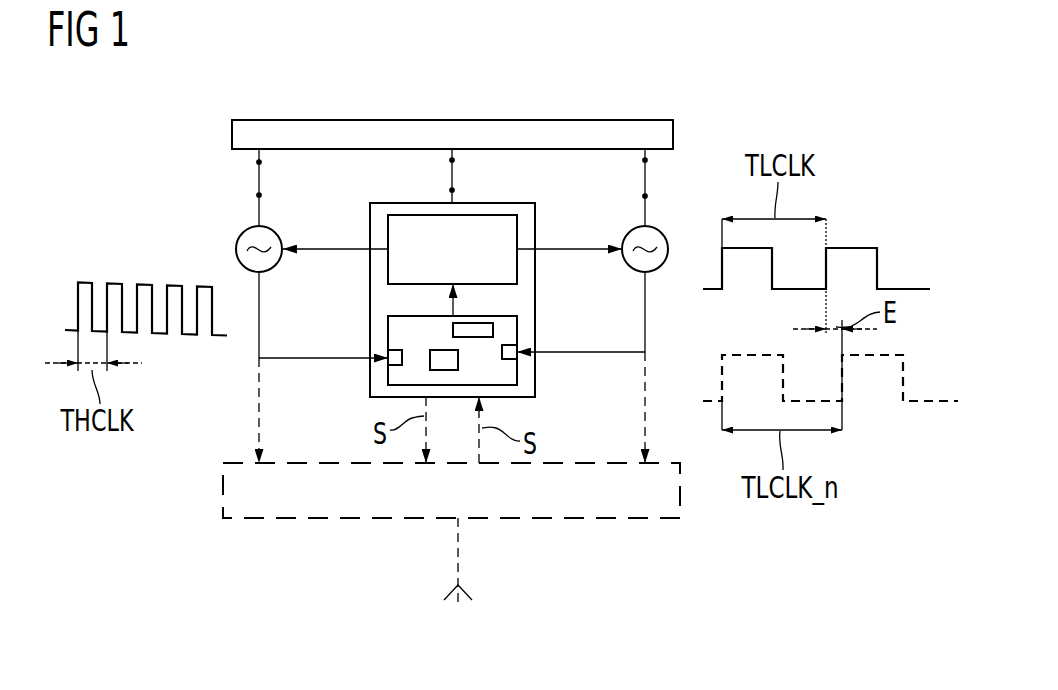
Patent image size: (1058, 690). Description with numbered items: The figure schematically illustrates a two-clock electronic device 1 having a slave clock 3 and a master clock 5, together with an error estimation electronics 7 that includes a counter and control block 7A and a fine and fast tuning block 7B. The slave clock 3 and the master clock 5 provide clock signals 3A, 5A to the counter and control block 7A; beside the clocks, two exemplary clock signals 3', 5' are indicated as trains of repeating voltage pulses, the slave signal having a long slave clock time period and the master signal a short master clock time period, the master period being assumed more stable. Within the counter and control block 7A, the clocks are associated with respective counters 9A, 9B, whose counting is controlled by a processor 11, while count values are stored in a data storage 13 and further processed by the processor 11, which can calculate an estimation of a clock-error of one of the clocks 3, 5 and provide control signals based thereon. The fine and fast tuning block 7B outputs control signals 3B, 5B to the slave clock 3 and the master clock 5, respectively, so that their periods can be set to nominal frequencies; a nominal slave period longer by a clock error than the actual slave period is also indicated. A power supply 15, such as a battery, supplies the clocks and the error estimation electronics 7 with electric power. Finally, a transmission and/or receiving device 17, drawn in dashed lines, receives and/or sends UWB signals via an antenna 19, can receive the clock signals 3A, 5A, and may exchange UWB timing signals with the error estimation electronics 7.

The two-clock electronic device 1 is at (133, 146).
The slave clock 3 is at (663, 238).
The clock signal of the slave clock 3' is at (816, 222).
The clock signal 3A is at (597, 351).
The control signal 3B is at (571, 248).
The master clock 5 is at (235, 242).
The clock signal of the master clock 5' is at (146, 267).
The clock signal 5A is at (308, 357).
The control signal 5B is at (336, 248).
The error estimation electronics 7 is at (535, 378).
The counter and control block 7A is at (370, 378).
The fine and fast tuning block 7B is at (430, 215).
The counter 9A is at (514, 346).
The counter 9B is at (388, 352).
The processor 11 is at (444, 370).
The data storage 13 is at (478, 323).
The power supply 15 is at (478, 120).
The transmission and/or receiving device 17 is at (592, 518).
The antenna 19 is at (460, 550).